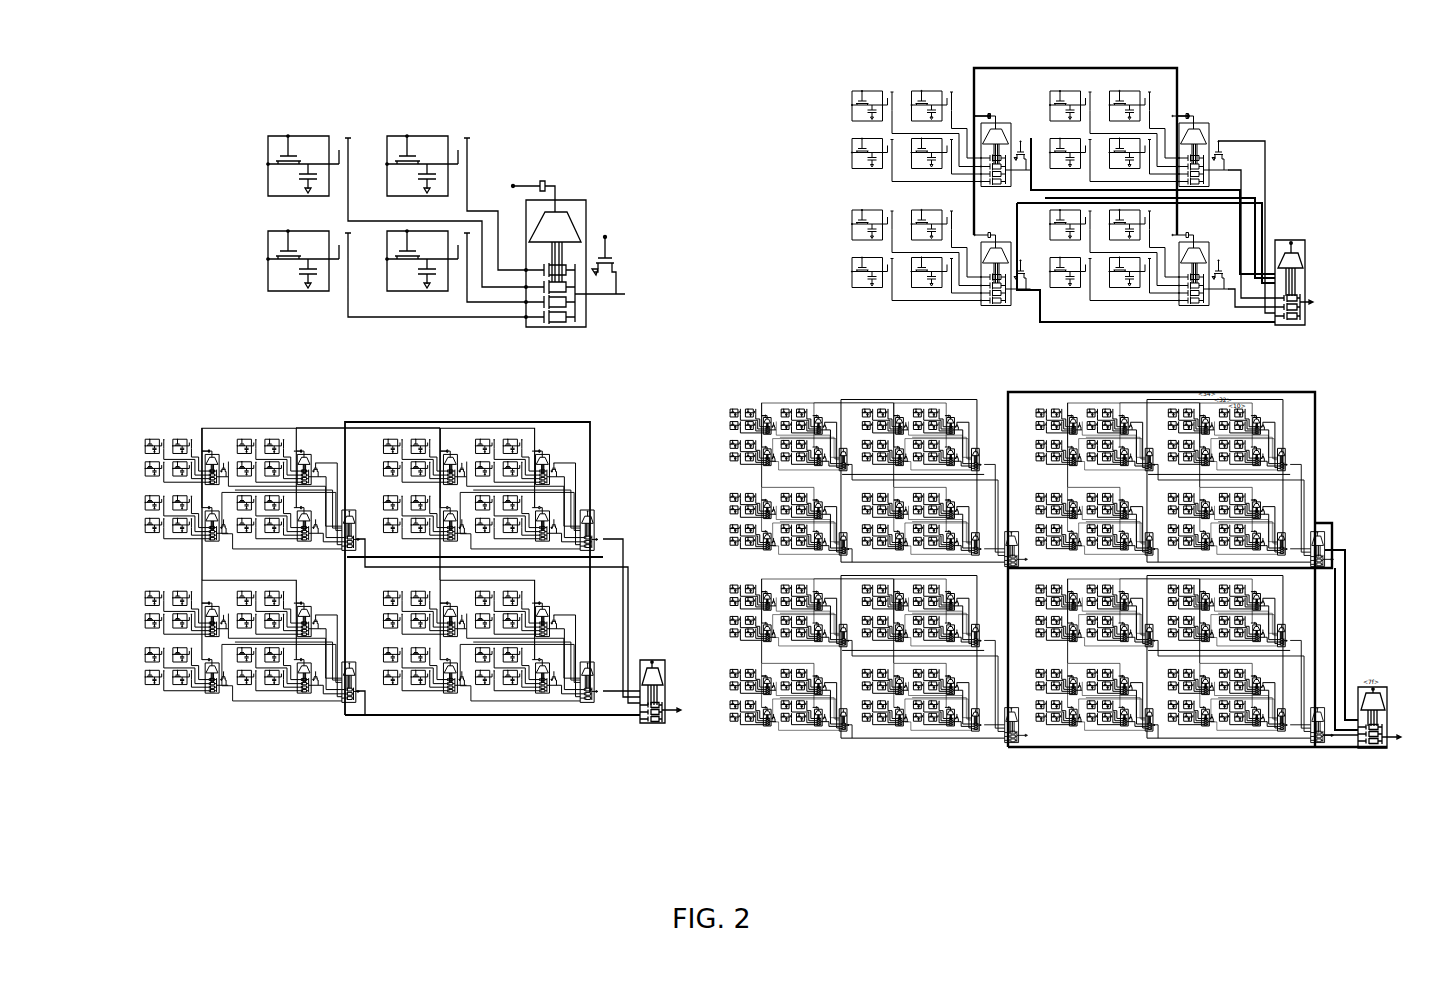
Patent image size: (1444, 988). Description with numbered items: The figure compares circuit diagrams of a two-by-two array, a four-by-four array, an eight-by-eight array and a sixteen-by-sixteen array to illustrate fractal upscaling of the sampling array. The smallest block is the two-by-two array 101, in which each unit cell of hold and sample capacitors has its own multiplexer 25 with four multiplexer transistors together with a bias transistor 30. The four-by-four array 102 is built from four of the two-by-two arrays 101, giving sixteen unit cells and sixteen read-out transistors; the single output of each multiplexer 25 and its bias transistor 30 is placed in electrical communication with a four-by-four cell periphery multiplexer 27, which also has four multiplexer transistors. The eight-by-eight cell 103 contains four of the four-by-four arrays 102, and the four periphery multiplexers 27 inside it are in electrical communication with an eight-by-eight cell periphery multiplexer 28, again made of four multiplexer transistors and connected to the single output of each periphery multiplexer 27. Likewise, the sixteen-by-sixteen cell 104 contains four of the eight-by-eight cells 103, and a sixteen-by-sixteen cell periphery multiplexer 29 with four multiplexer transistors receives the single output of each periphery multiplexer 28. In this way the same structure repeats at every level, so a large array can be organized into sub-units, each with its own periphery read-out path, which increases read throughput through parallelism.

The multiplexer 25 is at (588, 222).
The 4×4 cell periphery multiplexer 27 is at (1288, 240).
The 8×8 cell periphery multiplexer 28 is at (651, 723).
The 16×16 cell periphery multiplexer 29 is at (1378, 690).
The bias transistor 30 is at (607, 240).
The 2×2 array 101 is at (668, 243).
The 4×4 array 102 is at (745, 403).
The 8×8 cell 103 is at (758, 547).
The 16×16 cell 104 is at (1076, 536).